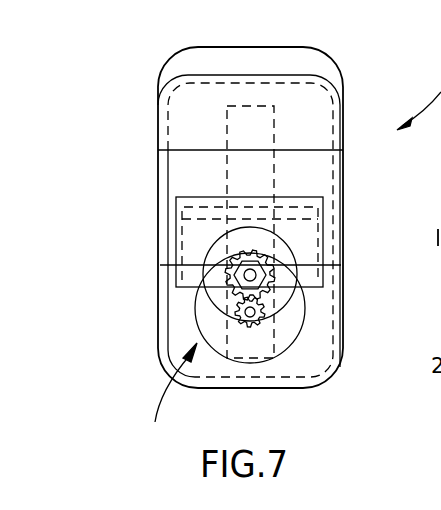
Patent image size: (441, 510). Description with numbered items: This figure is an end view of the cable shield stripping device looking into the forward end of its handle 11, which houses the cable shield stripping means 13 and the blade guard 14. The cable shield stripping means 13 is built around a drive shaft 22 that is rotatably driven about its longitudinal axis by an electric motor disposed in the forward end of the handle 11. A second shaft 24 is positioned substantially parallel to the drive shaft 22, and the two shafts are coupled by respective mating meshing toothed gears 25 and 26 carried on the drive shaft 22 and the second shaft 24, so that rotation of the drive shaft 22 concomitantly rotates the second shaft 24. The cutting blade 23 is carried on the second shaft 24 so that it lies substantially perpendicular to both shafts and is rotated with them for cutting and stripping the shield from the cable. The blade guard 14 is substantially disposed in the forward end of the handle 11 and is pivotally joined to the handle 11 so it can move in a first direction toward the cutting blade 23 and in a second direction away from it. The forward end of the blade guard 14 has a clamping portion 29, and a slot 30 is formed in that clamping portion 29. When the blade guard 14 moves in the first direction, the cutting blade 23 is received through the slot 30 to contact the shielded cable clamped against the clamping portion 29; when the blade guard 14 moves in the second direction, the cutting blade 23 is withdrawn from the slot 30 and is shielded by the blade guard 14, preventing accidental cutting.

The handle 11 is at (330, 60).
The cable shield stripping means 13 is at (168, 397).
The blade guard 14 is at (308, 238).
The drive shaft 22 is at (225, 303).
The cutting blade 23 is at (234, 263).
The second shaft 24 is at (265, 312).
The toothed gear 25 is at (228, 296).
The toothed gear 26 is at (268, 290).
The clamping portion 29 is at (304, 198).
The slot 30 is at (315, 211).